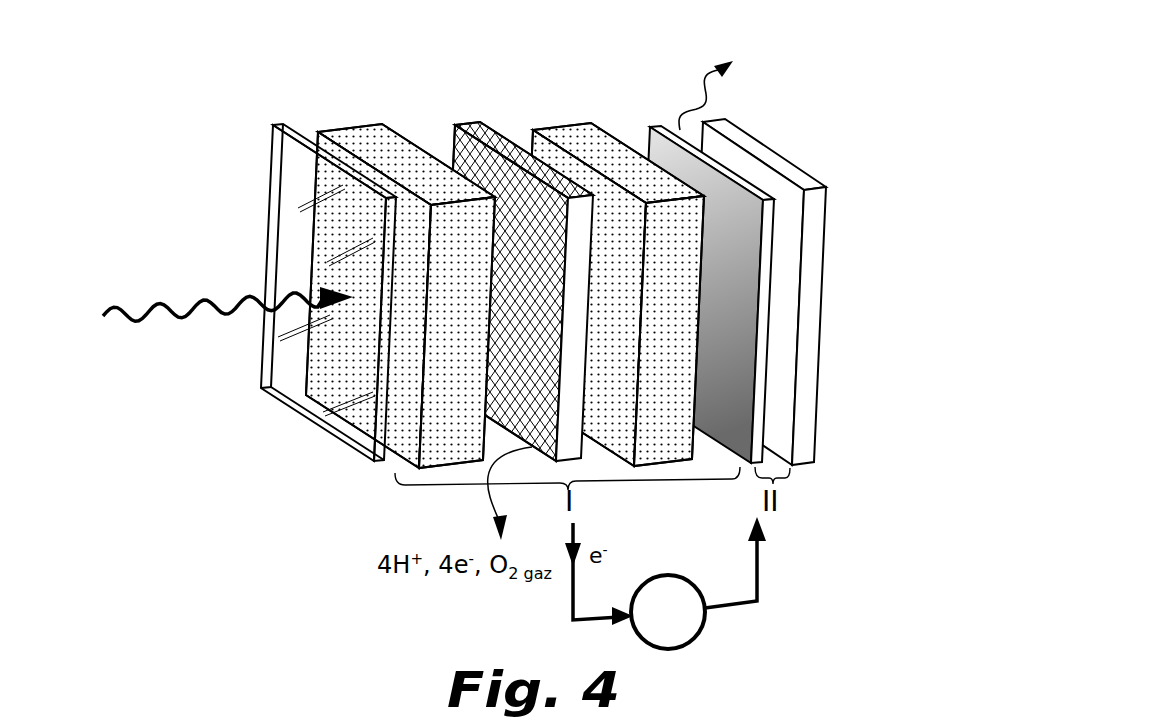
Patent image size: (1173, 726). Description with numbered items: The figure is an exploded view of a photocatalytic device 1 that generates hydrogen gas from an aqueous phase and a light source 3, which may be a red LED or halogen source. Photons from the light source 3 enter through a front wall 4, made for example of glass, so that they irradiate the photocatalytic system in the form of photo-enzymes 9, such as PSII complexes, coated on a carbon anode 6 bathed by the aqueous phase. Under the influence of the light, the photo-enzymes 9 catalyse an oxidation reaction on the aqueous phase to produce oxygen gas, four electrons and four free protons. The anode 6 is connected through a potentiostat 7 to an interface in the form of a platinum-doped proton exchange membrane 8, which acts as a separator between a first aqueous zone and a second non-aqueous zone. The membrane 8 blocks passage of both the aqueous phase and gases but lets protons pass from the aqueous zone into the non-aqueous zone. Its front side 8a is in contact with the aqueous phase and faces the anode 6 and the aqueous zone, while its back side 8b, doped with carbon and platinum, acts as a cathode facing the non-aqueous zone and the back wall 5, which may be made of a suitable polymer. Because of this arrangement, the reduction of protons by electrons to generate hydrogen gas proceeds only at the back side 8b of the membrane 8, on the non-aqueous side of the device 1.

The photocatalytic device 1 is at (276, 95).
The light source 3 is at (227, 294).
The front wall 4 is at (290, 187).
The back wall 5 is at (817, 177).
The anode 6 is at (518, 260).
The potentiostat 7 is at (690, 642).
The proton exchange membrane 8 is at (758, 254).
The front side of membrane 8a is at (737, 295).
The back side of membrane 8b is at (767, 317).
The photo-enzymes 9 is at (518, 207).